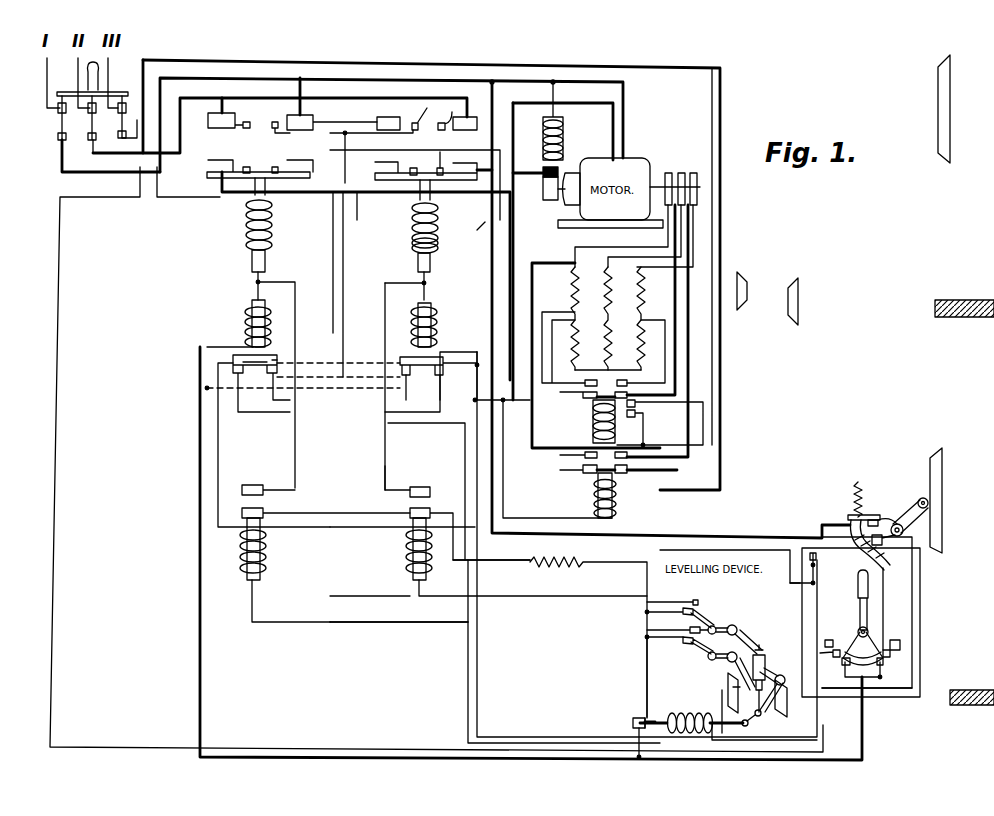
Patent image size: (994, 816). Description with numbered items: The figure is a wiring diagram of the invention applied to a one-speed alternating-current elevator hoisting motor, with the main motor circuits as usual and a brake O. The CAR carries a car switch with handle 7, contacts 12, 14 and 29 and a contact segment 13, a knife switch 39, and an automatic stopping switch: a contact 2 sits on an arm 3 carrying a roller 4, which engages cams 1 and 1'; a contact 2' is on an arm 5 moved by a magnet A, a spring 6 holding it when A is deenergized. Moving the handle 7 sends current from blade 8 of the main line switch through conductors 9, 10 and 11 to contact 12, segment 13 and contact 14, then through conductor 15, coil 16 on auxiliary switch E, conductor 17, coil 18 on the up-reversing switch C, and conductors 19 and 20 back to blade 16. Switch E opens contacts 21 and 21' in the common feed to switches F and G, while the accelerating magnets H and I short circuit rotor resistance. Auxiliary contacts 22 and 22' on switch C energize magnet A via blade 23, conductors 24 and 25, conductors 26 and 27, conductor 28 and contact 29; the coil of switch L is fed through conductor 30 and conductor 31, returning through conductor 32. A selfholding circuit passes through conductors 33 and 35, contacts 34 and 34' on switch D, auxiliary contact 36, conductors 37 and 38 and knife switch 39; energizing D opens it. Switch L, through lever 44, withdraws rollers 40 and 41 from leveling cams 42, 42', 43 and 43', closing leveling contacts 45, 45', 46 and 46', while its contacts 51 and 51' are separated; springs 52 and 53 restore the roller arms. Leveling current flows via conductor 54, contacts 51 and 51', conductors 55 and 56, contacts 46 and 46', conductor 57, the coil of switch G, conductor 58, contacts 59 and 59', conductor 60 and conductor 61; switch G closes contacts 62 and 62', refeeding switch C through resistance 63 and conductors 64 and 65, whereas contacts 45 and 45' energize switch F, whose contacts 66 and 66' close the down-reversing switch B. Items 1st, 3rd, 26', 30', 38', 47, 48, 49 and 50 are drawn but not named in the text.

The cam 1 is at (945, 500).
The cam 1' is at (961, 109).
The first rail 1st is at (972, 689).
The contact 2 is at (880, 534).
The contact 2' is at (875, 510).
The arm 3 is at (897, 522).
The third rail 3rd is at (964, 300).
The roller 4 is at (923, 498).
The arm 5 is at (108, 98).
The spring 6 is at (853, 503).
The car switch handle 7 is at (860, 592).
The blade 8 is at (122, 116).
The conductor 9 is at (137, 125).
The conductor 10 is at (98, 196).
The conductor 11 is at (863, 670).
The contact 12 is at (844, 666).
The contact segment 13 is at (878, 648).
The contact 14 is at (845, 632).
The conductor 15 is at (475, 396).
The coil 16 is at (88, 126).
The conductor 17 is at (428, 287).
The coil 18 is at (440, 245).
The conductor 19 is at (160, 192).
The conductor 20 is at (143, 150).
The contact 21 is at (439, 361).
The contact 21' is at (409, 386).
The auxiliary contact 22 is at (454, 133).
The auxiliary contact 22' is at (425, 162).
The blade 23 is at (58, 126).
The conductor 24 is at (70, 170).
The conductor 25 is at (446, 116).
The conductor 26 is at (447, 162).
The switch blade 26' is at (422, 115).
The conductor 27 is at (462, 153).
The conductor 28 is at (885, 600).
The contact 29 is at (830, 648).
The conductor 30 is at (439, 658).
The conductor 30' is at (477, 234).
The conductor 31 is at (800, 740).
The conductor 32 is at (912, 600).
The conductor 33 is at (408, 405).
The contact 34 is at (261, 383).
The contact 34' is at (296, 340).
The conductor 35 is at (308, 362).
The auxiliary contact 36 is at (370, 285).
The conductor 37 is at (358, 127).
The conductor 38 is at (406, 376).
The conductor 38' is at (736, 564).
The knife switch 39 is at (812, 579).
The roller 40 is at (765, 672).
The roller 41 is at (740, 730).
The leveling cam 42 is at (792, 700).
The leveling cam 42' is at (822, 301).
The leveling cam 43 is at (720, 693).
The leveling cam 43' is at (737, 310).
The lever 44 is at (762, 718).
The leveling contact 45 is at (681, 637).
The leveling contact 45' is at (688, 650).
The leveling contact 46 is at (708, 594).
The leveling contact 46' is at (687, 613).
The pivot 47 is at (710, 661).
The pivot 48 is at (722, 624).
The pivot 49 is at (734, 671).
The pivot 50 is at (738, 628).
The contact 51 is at (655, 714).
The contact 51' is at (627, 714).
The spring 52 is at (787, 686).
The spring 53 is at (732, 685).
The conductor 54 is at (636, 729).
The conductor 55 is at (650, 697).
The conductor 56 is at (665, 622).
The conductor 57 is at (676, 598).
The conductor 58 is at (401, 574).
The contact 59 is at (255, 368).
The contact 59' is at (248, 445).
The conductor 60 is at (256, 412).
The conductor 61 is at (450, 378).
The contact 62 is at (470, 526).
The contact 62' is at (432, 482).
The resistance 63 is at (568, 562).
The conductor 64 is at (504, 562).
The conductor 65 is at (385, 466).
The contact 66 is at (291, 516).
The contact 66' is at (268, 477).
The magnet A is at (858, 552).
The down-reversing switch B is at (225, 205).
The reversing switch C is at (440, 200).
The switch D is at (250, 325).
The auxiliary switch E is at (438, 330).
The switch F is at (268, 552).
The switch G is at (408, 545).
The accelerating magnet H is at (594, 424).
The accelerating magnet I is at (594, 494).
The leveling switch L is at (675, 715).
The brake O is at (562, 140).
The car CAR is at (920, 605).